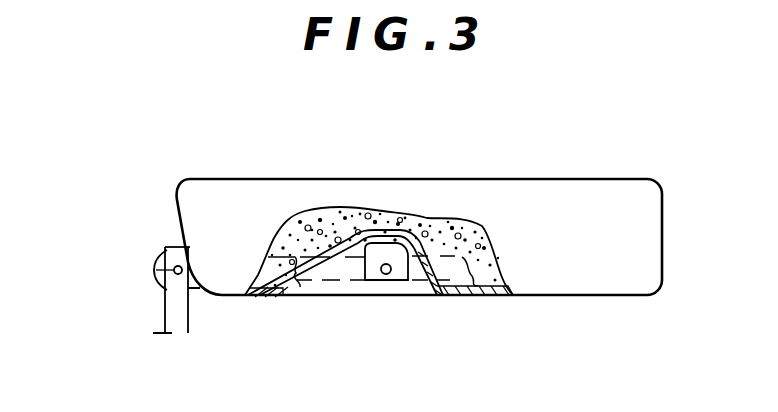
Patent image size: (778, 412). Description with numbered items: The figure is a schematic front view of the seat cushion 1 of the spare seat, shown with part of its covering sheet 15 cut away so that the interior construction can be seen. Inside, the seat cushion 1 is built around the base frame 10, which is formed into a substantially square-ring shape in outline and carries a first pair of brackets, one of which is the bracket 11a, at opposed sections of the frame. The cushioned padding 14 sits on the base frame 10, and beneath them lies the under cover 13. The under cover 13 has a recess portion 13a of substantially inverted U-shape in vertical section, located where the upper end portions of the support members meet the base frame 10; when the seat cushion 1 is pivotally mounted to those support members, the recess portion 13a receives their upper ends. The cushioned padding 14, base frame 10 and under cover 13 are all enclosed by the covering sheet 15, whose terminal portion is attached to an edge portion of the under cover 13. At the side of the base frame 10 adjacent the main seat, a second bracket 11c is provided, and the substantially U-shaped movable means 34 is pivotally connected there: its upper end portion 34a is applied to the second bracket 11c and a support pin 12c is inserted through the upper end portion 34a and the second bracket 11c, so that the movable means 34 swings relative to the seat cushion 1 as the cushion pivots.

The seat cushion 1 is at (403, 179).
The base frame 10 is at (425, 286).
The bracket 11a is at (396, 280).
The second bracket 11c is at (160, 262).
The support pin 12c is at (163, 283).
The under cover 13 is at (318, 280).
The recess portion 13a is at (412, 237).
The cushioned padding 14 is at (321, 232).
The covering sheet 15 is at (572, 179).
The movable means 34 is at (170, 330).
The upper end portion 34a is at (178, 247).